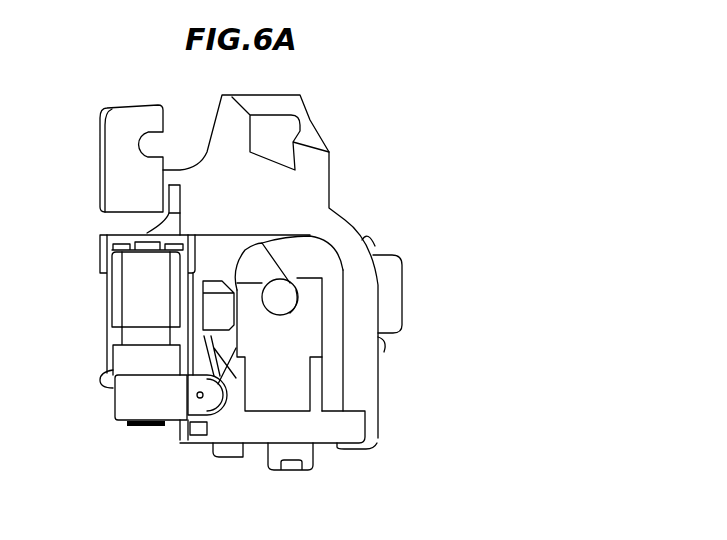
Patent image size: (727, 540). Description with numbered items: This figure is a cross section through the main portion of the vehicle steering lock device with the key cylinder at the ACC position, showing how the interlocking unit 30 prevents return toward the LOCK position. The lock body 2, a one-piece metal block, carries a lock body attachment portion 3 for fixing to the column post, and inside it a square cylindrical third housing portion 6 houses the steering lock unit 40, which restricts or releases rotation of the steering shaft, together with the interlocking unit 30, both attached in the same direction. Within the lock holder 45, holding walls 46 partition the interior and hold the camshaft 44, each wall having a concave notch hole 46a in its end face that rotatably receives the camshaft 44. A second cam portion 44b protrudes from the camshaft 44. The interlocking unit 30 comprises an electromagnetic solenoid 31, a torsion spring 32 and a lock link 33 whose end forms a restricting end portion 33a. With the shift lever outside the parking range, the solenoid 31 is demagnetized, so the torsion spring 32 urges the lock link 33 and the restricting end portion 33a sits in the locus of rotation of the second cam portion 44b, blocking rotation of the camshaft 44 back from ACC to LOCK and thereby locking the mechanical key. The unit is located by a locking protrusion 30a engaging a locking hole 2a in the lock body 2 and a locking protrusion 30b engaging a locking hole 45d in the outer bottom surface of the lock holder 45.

The lock body 2 is at (382, 167).
The locking hole 2a is at (176, 205).
The lock body attachment portion 3 is at (123, 120).
The third housing portion 6 is at (341, 373).
The interlocking unit 30 is at (86, 311).
The locking protrusion 30a is at (175, 207).
The locking protrusion 30b is at (200, 413).
The electromagnetic solenoid 31 is at (143, 290).
The torsion spring 32 is at (190, 376).
The lock link 33 is at (234, 345).
The restricting end portion 33a is at (217, 292).
The steering lock unit 40 is at (328, 466).
The camshaft 44 is at (288, 292).
The second cam portion 44b is at (265, 257).
The lock holder 45 is at (350, 429).
The locking hole 45d is at (204, 437).
The holding wall 46 is at (307, 335).
The concave notch hole 46a is at (290, 298).